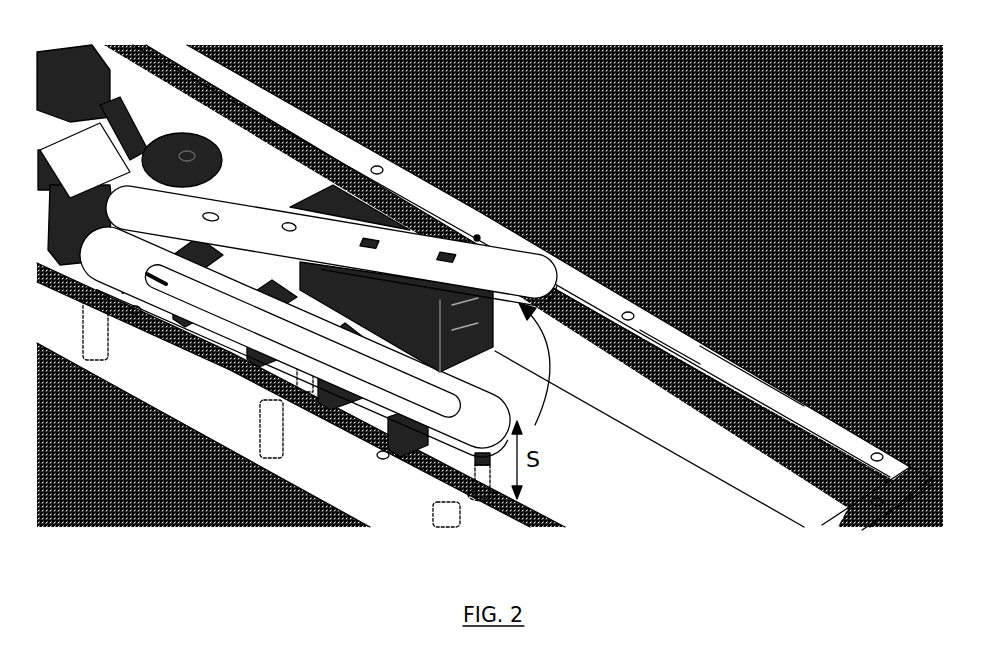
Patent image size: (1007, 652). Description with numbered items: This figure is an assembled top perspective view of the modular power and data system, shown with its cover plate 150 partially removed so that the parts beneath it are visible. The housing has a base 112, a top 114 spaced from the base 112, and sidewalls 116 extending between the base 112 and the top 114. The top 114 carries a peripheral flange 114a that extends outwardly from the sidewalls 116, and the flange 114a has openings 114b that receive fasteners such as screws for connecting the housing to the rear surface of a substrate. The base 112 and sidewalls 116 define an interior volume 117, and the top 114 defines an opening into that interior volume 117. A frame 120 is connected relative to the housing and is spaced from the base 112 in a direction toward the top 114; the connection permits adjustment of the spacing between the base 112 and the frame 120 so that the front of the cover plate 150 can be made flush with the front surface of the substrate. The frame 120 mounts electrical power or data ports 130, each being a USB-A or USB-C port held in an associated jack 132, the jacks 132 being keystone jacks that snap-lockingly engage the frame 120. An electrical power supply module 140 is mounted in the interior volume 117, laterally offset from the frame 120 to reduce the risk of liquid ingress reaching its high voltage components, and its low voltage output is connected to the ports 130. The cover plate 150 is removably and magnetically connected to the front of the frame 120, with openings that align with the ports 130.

The base 112 is at (592, 452).
The top 114 is at (578, 295).
The peripheral flange 114a is at (792, 403).
The openings 114b is at (379, 166).
The sidewalls 116 is at (180, 385).
The interior volume 117 is at (680, 385).
The frame 120 is at (165, 263).
The electrical power or data port 130 is at (380, 363).
The jack 132 is at (388, 420).
The electrical power supply module 140 is at (337, 188).
The cover plate 150 is at (508, 262).